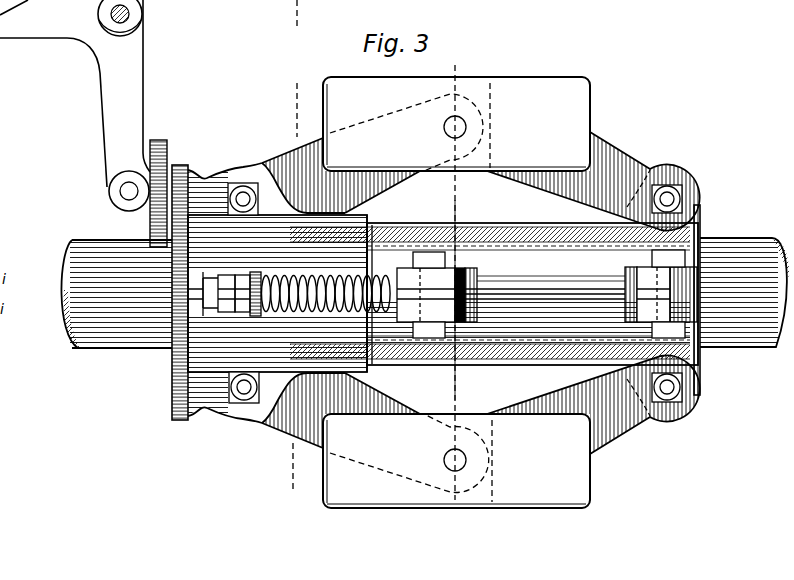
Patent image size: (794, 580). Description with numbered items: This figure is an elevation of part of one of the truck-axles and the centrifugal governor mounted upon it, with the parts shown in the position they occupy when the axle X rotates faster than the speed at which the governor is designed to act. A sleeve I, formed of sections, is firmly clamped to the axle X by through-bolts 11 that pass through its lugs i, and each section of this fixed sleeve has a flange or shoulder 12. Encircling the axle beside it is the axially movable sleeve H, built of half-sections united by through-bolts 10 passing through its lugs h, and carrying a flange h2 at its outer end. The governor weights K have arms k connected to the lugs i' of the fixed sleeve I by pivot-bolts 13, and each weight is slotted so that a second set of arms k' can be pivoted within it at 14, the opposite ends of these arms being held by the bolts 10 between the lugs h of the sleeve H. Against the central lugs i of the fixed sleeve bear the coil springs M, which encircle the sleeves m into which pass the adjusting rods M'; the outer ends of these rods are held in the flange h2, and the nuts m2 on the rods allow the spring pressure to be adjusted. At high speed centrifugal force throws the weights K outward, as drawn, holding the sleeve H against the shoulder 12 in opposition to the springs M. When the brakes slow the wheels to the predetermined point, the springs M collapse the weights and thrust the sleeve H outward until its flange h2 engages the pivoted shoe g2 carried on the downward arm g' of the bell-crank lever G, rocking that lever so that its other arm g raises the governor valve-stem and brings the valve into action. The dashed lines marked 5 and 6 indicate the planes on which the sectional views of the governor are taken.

The axle X is at (116, 294).
The arm g is at (75, 86).
The bell-crank lever G is at (120, 36).
The arm g' is at (113, 130).
The pivoted shoe g2 is at (168, 152).
The flange h2 is at (162, 2).
The lugs h is at (200, 432).
The adjusting rods M' is at (381, 154).
The nuts m2 is at (232, 280).
The sleeves m is at (245, 279).
The sleeve H is at (258, 278).
The coil springs M is at (326, 156).
The flange or shoulder 12 is at (367, 216).
The sleeve I is at (494, 294).
The lugs i is at (547, 286).
The through-bolts 11 is at (442, 252).
The lugs i' is at (711, 303).
The arms k' is at (304, 291).
The through-bolts 10 is at (241, 186).
The arms k is at (593, 290).
The pivot-bolts 13 is at (684, 193).
The governor weights K is at (456, 292).
The pivot 14 is at (444, 129).
The section line 5 5 is at (477, 0).
The section line 6 6 is at (294, 255).